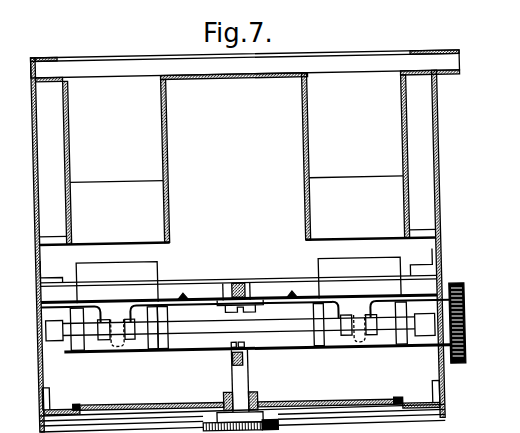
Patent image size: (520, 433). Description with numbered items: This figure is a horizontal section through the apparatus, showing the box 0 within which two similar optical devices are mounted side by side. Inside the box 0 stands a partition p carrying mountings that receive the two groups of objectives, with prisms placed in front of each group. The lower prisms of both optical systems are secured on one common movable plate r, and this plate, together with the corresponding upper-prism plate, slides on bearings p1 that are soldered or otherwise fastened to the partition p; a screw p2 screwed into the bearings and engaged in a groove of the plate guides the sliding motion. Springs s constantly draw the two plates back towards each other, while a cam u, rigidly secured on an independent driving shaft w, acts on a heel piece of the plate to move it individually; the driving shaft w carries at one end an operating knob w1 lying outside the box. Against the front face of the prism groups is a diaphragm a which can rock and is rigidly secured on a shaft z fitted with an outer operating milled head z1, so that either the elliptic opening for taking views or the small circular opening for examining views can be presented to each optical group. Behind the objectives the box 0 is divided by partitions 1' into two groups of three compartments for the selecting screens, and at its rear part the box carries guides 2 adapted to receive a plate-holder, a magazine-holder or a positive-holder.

The box 0 is at (28, 194).
The guides 2 is at (206, 71).
The partitions 1' is at (237, 157).
The partition p is at (200, 283).
The bearings p1 is at (222, 284).
The screw p2 is at (242, 292).
The springs s is at (177, 296).
The driving shaft w is at (191, 333).
The movable plate r is at (119, 367).
The cam u is at (101, 354).
The diaphragm a is at (186, 355).
The operating knob w1 is at (458, 326).
The shaft z is at (232, 376).
The milled head z1 is at (263, 423).